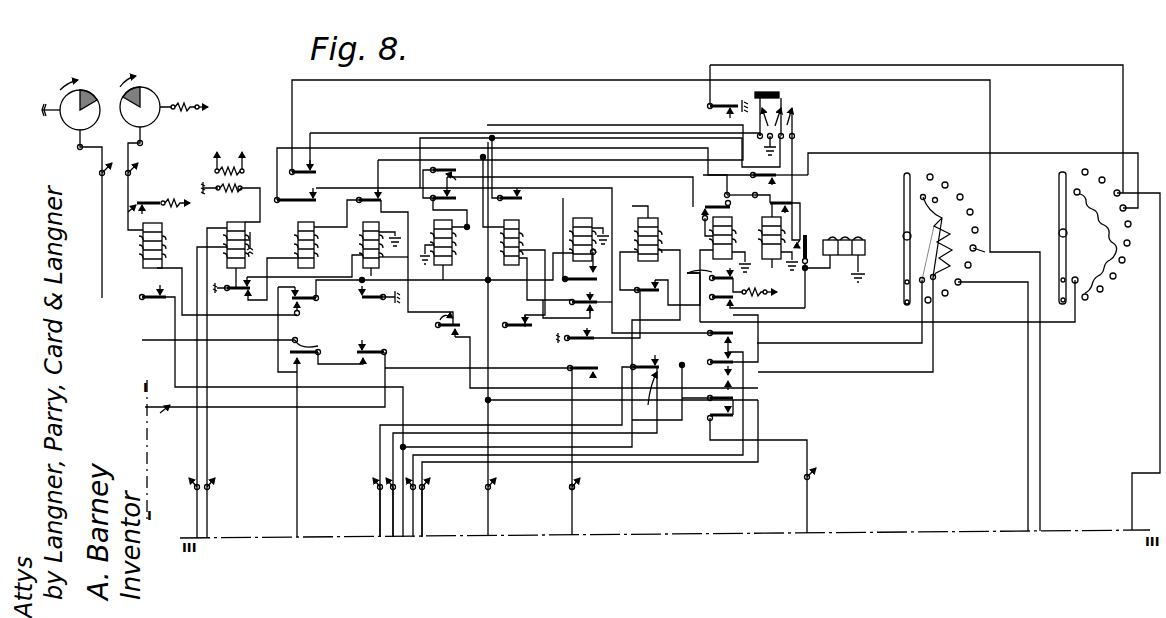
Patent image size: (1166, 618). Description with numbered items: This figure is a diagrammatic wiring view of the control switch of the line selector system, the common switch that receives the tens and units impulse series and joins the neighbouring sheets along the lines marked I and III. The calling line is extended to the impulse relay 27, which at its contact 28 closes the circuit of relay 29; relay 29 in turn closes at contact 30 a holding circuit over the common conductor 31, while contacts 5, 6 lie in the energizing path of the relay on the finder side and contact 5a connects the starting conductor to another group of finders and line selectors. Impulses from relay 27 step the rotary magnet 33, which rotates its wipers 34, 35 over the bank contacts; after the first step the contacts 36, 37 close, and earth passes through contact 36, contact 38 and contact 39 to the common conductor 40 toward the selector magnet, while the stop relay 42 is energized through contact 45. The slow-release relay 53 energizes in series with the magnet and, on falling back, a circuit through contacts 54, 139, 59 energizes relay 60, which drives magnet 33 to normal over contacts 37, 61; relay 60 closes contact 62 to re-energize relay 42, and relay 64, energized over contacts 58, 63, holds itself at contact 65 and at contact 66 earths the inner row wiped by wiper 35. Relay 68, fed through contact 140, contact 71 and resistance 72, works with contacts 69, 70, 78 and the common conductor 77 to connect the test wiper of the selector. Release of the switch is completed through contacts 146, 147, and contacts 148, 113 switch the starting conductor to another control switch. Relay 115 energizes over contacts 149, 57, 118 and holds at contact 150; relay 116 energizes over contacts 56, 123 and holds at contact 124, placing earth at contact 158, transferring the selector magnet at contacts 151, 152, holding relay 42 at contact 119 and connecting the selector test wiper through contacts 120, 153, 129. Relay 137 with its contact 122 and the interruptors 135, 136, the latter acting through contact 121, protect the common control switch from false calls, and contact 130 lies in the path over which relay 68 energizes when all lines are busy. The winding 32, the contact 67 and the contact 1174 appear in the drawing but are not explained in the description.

The contact 5 is at (471, 363).
The contact 5a is at (352, 349).
The contact 6 is at (302, 446).
The relay 27 is at (224, 345).
The contact 28 is at (288, 277).
The relay 29 is at (385, 273).
The contact 30 is at (444, 279).
The common conductor 31 is at (622, 448).
The relay coil 32 is at (378, 206).
The magnet 33 is at (844, 259).
The wiper 34 is at (892, 352).
The wiper 35 is at (1087, 236).
The contact 36 is at (758, 112).
The contact 37 is at (789, 110).
The contact 38 is at (453, 203).
The contact 39 is at (731, 335).
The common conductor 40 is at (424, 492).
The stop relay 42 is at (438, 250).
The contact 45 is at (735, 366).
The relay 53 is at (316, 234).
The contact 54 is at (298, 329).
The contact 56 is at (296, 191).
The contact 57 is at (313, 165).
The contact 58 is at (597, 356).
The contact 59 is at (606, 301).
The relay 60 is at (504, 254).
The contact 61 is at (814, 261).
The contact 62 is at (511, 191).
The contact 63 is at (519, 329).
The relay 64 is at (586, 238).
The contact 65 is at (580, 273).
The contact 66 is at (575, 331).
The contact 67 is at (583, 451).
The relay 68 is at (541, 324).
The contact 69 is at (667, 288).
The contact 70 is at (516, 443).
The contact 71 is at (734, 278).
The resistance 72 is at (775, 284).
The common conductor 77 is at (390, 470).
The contact 78 is at (887, 300).
The contact 113 is at (220, 333).
The relay 115 is at (778, 241).
The relay 116 is at (719, 269).
The contact 118 is at (790, 203).
The contact 119 is at (735, 392).
The contact 120 is at (758, 466).
The contact 121 is at (270, 408).
The contact 122 is at (159, 214).
The contact 123 is at (453, 181).
The contact 124 is at (704, 212).
The contact 129 is at (821, 479).
The contact 130 is at (586, 487).
The interruptor 135 is at (150, 124).
The interruptor 136 is at (70, 124).
The relay 137 is at (143, 257).
The contact 139 is at (442, 308).
The contact 140 is at (581, 299).
The contact 146 is at (405, 255).
The contact 147 is at (234, 300).
The contact 148 is at (320, 349).
The contact 149 is at (603, 323).
The contact 150 is at (771, 204).
The contact 151 is at (695, 285).
The contact 152 is at (745, 357).
The contact 153 is at (645, 396).
The contact 158 is at (728, 113).
The contact 1174 is at (779, 183).